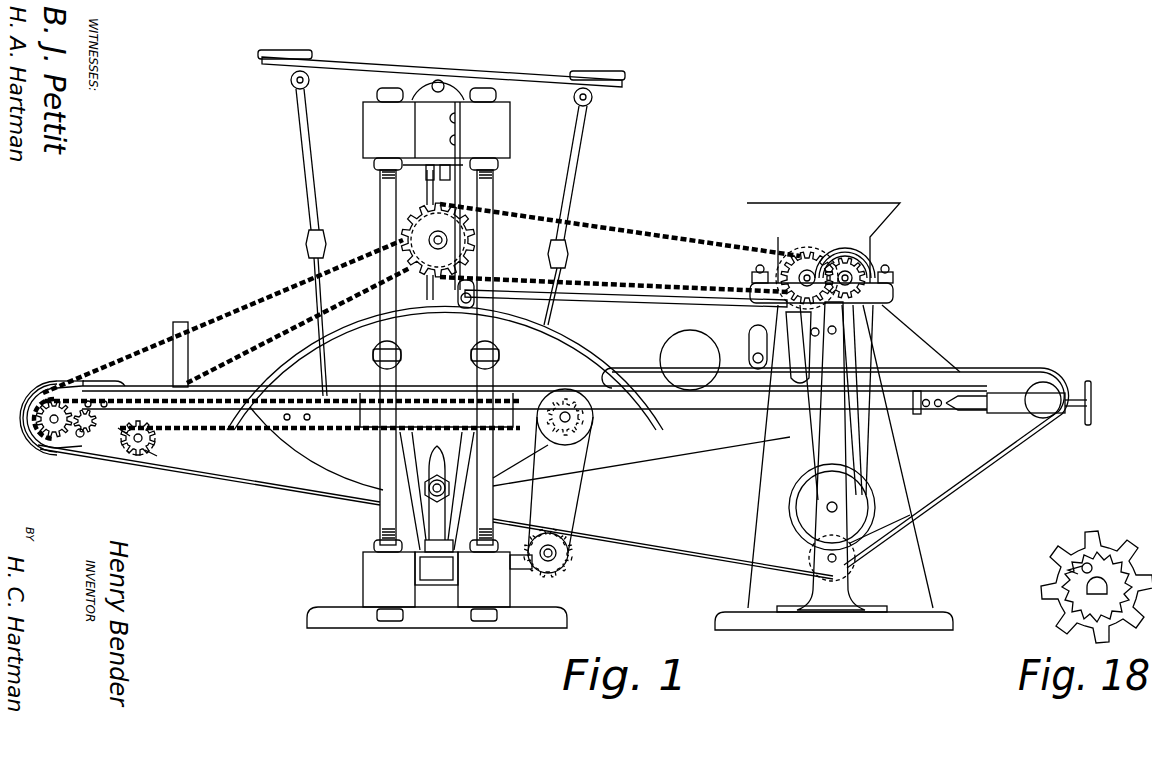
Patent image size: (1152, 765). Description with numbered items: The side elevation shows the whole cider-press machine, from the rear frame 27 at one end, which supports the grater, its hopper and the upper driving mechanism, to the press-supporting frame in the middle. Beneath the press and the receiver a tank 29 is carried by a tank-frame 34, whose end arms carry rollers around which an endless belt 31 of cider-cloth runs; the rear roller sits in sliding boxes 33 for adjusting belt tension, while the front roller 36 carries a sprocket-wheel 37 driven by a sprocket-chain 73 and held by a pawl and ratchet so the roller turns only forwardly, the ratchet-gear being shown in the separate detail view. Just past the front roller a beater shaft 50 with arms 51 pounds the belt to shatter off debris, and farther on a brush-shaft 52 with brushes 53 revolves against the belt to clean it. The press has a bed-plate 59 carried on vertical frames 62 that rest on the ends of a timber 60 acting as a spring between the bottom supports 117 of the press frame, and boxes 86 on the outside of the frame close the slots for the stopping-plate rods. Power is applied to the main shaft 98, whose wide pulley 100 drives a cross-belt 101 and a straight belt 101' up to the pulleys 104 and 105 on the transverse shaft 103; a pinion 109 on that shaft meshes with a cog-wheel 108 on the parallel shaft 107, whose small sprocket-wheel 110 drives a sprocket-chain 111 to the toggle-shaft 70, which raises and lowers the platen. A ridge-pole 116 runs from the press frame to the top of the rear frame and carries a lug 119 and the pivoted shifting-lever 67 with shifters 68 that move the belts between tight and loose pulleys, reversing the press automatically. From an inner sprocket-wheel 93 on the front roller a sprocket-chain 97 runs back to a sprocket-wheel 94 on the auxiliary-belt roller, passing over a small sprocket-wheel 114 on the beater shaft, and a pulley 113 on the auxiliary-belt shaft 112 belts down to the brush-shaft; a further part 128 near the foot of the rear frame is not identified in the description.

The rear frame 27 is at (893, 285).
The tank 29 is at (303, 452).
The endless belt 31 is at (632, 377).
The sliding boxes 33 is at (1000, 403).
The tank-frame 34 is at (220, 404).
The front roller 36 is at (33, 437).
The sprocket-wheel 37 is at (80, 437).
The beater shaft 50 is at (147, 436).
The arms 51 is at (126, 431).
The brush-shaft 52 is at (552, 561).
The brushes 53 is at (563, 558).
The bed-plate 59 is at (377, 410).
The timber 60 is at (428, 575).
The vertical frames 62 is at (418, 517).
The shifting-lever 67 is at (667, 308).
The shifters 68 is at (811, 332).
The toggle-shaft 70 is at (410, 236).
The sprocket-chain 73 is at (235, 312).
The boxes 86 is at (333, 358).
The inner sprocket-wheel 93 is at (50, 437).
The sprocket-wheel 94 is at (567, 424).
The sprocket-chain 97 is at (250, 430).
The main shaft 98 is at (827, 507).
The wide pulley 100 is at (852, 505).
The cross-belt 101 is at (877, 400).
The straight belt 101' is at (886, 400).
The transverse shaft 103 is at (845, 265).
The pulley 104 is at (868, 268).
The tight pulley 105 is at (862, 252).
The parallel shaft 107 is at (808, 267).
The cog-wheel 108 is at (823, 262).
The pinion 109 is at (838, 264).
The small sprocket-wheel 110 is at (780, 253).
The sprocket-chain 111 is at (653, 237).
The auxiliary-belt shaft 112 is at (570, 428).
The pulley 113 is at (573, 390).
The small sprocket-wheel 114 is at (137, 448).
The ridge-pole 116 is at (583, 292).
The bottom supports 117 is at (405, 598).
The lug 119 is at (478, 303).
The guide pulley 128 is at (838, 558).